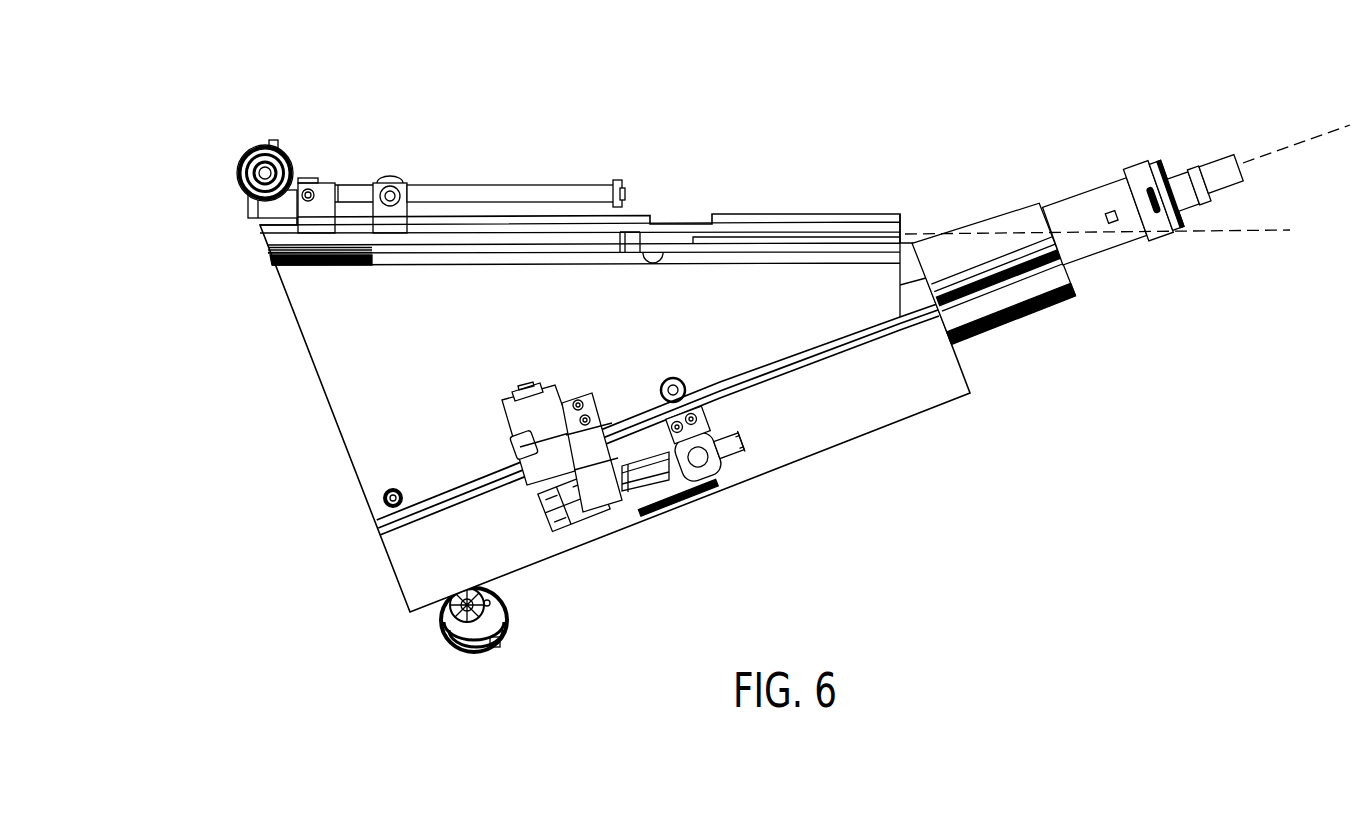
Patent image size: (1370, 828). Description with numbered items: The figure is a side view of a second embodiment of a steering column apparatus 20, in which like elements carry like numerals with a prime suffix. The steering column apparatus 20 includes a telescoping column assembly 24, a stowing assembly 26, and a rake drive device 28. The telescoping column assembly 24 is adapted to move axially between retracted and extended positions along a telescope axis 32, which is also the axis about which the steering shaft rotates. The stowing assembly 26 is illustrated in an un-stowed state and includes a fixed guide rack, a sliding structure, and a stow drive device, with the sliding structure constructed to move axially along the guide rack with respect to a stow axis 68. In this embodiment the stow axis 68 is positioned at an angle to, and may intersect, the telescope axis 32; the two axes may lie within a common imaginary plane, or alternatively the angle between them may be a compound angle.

The steering column apparatus 20 is at (750, 341).
The telescoping column assembly 24 is at (985, 357).
The stowing assembly 26 is at (220, 225).
The rake drive device 28 is at (602, 533).
The telescope axis 32 is at (1300, 140).
The stow axis 68 is at (1210, 232).